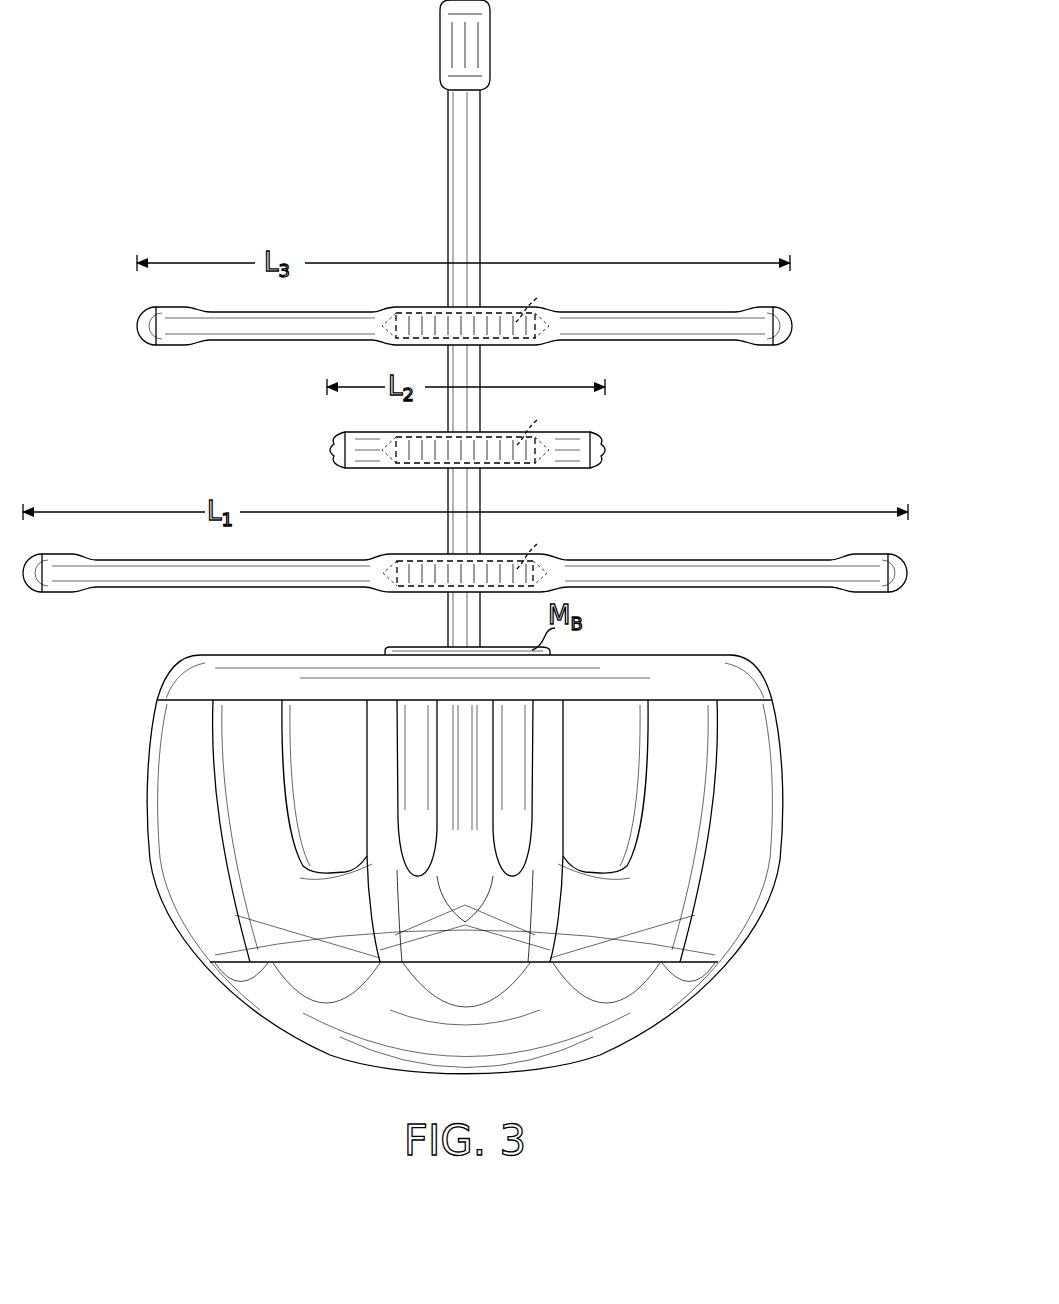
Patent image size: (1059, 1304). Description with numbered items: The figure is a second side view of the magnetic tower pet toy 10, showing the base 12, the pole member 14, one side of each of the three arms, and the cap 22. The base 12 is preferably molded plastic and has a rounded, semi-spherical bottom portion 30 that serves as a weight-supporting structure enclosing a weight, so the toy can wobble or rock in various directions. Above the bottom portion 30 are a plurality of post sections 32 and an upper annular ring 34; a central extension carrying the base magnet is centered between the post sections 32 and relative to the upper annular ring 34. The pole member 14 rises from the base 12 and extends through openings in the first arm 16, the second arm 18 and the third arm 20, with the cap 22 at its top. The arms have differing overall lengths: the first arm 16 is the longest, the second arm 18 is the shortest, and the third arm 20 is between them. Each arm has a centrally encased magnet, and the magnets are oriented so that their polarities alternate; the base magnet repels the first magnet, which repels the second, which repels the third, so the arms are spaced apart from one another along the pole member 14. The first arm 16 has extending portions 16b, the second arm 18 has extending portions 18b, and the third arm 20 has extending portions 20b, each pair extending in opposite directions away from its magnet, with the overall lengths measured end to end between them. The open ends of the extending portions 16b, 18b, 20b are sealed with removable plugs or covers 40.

The magnetic tower pet toy 10 is at (694, 68).
The base 12 is at (506, 852).
The pole member 14 is at (482, 190).
The first arm 16 is at (465, 578).
The extending portions 16b is at (260, 587).
The second arm 18 is at (498, 450).
The extending portions 18b is at (368, 468).
The third arm 20 is at (503, 324).
The extending portions 20b is at (246, 340).
The cap 22 is at (480, 40).
The bottom portion 30 is at (620, 1030).
The post sections 32 is at (380, 740).
The upper annular ring 34 is at (745, 672).
The removable plugs or covers 40 is at (138, 328).